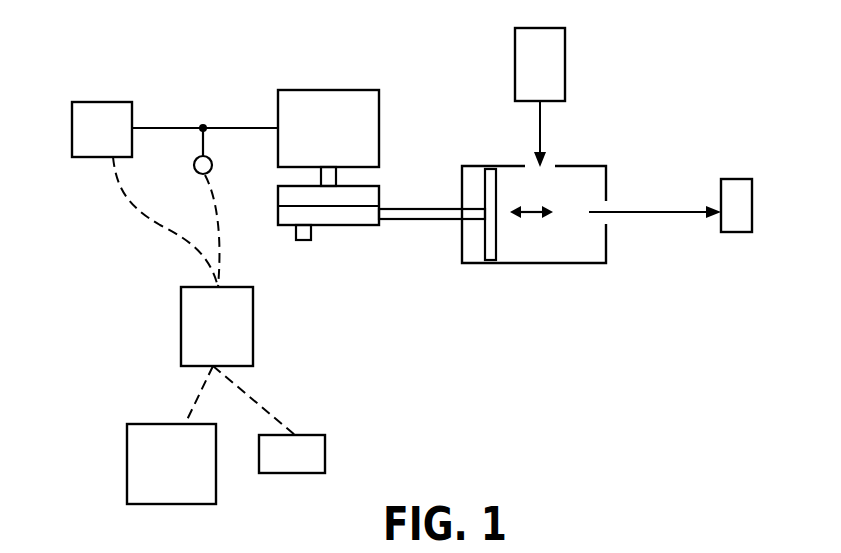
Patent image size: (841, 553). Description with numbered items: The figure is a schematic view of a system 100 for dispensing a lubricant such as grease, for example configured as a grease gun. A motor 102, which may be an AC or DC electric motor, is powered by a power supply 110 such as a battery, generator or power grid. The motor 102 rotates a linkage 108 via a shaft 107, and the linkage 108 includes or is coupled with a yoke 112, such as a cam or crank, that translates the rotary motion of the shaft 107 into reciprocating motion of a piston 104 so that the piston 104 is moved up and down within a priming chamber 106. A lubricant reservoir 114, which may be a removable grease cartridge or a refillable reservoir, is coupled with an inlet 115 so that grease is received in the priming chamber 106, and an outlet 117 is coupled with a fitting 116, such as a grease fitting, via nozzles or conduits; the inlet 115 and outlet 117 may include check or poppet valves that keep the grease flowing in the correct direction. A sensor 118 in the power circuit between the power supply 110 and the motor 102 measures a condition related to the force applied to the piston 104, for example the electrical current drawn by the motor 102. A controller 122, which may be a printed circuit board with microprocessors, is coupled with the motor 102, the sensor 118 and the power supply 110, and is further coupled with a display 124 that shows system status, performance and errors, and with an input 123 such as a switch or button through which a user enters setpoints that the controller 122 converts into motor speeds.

The system 100 is at (140, 56).
The motor 102 is at (342, 90).
The piston 104 is at (492, 245).
The priming chamber 106 is at (555, 246).
The shaft 107 is at (326, 179).
The linkage 108 is at (278, 192).
The power supply 110 is at (118, 139).
The yoke 112 is at (356, 225).
The lubricant reservoir 114 is at (565, 52).
The inlet 115 is at (550, 177).
The fitting 116 is at (737, 179).
The outlet 117 is at (624, 224).
The sensor 118 is at (203, 174).
The controller 122 is at (233, 333).
The input 123 is at (325, 450).
The display 124 is at (187, 470).